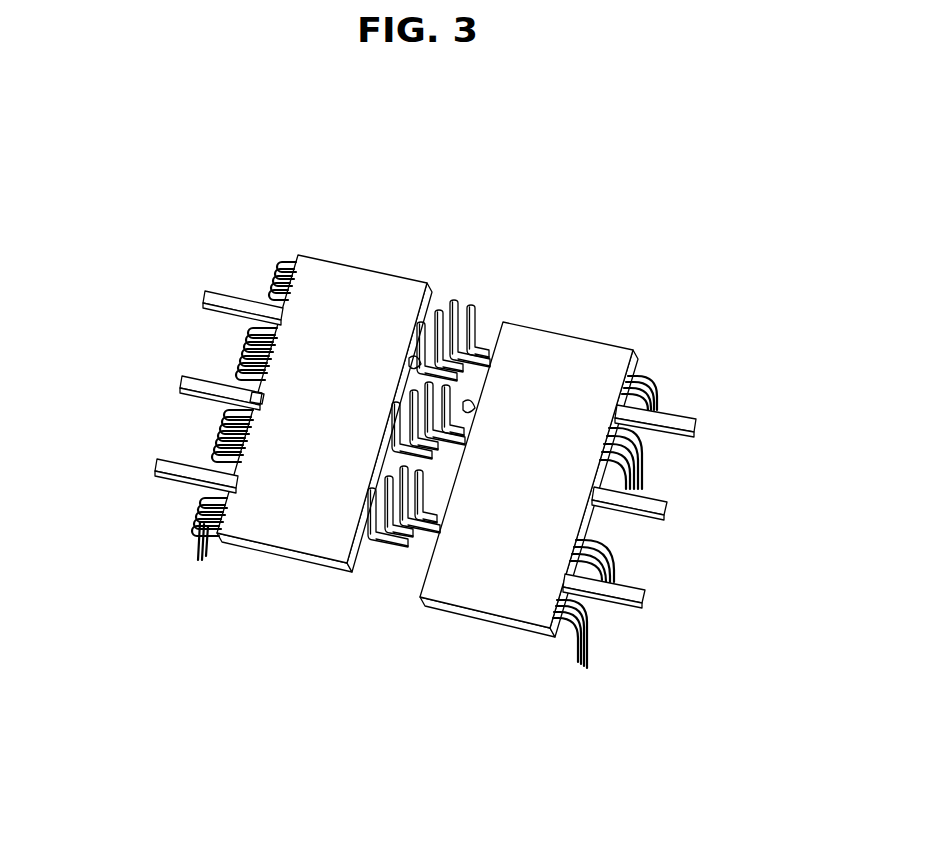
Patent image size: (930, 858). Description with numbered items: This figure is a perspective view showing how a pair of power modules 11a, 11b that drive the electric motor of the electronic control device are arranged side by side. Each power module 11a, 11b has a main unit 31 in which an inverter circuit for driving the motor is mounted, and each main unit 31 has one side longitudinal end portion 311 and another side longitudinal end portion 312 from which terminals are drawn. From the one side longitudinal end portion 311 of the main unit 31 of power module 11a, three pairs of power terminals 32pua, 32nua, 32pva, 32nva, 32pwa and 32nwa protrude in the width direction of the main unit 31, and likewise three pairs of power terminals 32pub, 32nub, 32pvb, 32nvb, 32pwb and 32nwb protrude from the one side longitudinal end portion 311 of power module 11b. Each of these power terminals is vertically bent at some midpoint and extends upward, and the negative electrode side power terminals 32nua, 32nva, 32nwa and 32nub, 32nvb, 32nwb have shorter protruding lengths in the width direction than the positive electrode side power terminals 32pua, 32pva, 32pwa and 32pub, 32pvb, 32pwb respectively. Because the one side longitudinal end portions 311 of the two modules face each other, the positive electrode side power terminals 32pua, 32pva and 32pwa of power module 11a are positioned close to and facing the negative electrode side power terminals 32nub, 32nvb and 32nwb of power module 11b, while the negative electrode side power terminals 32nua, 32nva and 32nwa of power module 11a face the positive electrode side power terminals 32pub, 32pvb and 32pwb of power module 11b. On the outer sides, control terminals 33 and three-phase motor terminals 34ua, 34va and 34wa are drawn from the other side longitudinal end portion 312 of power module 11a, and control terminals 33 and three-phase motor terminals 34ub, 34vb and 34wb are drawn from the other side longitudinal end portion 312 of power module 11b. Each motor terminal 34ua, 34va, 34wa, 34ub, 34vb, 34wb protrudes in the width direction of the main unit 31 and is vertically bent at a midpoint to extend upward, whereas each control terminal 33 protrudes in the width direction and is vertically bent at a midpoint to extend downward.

The power module 11a is at (246, 582).
The power module 11b is at (475, 660).
The main unit 31 is at (355, 280).
The one side longitudinal end portion 311 is at (409, 362).
The other side longitudinal end portion 312 is at (254, 398).
The negative electrode side power terminal 32nwa is at (416, 330).
The positive electrode side power terminal 32pwa is at (463, 300).
The negative electrode side power terminal 32nwb is at (476, 318).
The positive electrode side power terminal 32pwb is at (438, 348).
The negative electrode side power terminal 32nva is at (392, 428).
The positive electrode side power terminal 32pva is at (428, 390).
The negative electrode side power terminal 32nvb is at (447, 427).
The positive electrode side power terminal 32pvb is at (450, 460).
The negative electrode side power terminal 32nua is at (368, 492).
The positive electrode side power terminal 32pua is at (388, 478).
The negative electrode side power terminal 32nub is at (420, 502).
The positive electrode side power terminal 32pub is at (394, 555).
The control terminal 33 is at (262, 305).
The three-phase motor terminal 34wa is at (204, 299).
The three-phase motor terminal 34va is at (181, 384).
The three-phase motor terminal 34ua is at (156, 467).
The three-phase motor terminal 34wb is at (698, 422).
The three-phase motor terminal 34vb is at (670, 510).
The three-phase motor terminal 34ub is at (646, 600).